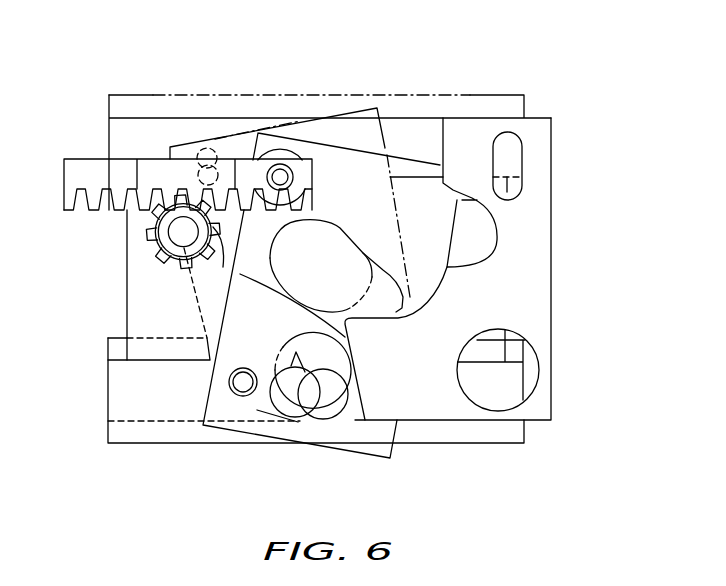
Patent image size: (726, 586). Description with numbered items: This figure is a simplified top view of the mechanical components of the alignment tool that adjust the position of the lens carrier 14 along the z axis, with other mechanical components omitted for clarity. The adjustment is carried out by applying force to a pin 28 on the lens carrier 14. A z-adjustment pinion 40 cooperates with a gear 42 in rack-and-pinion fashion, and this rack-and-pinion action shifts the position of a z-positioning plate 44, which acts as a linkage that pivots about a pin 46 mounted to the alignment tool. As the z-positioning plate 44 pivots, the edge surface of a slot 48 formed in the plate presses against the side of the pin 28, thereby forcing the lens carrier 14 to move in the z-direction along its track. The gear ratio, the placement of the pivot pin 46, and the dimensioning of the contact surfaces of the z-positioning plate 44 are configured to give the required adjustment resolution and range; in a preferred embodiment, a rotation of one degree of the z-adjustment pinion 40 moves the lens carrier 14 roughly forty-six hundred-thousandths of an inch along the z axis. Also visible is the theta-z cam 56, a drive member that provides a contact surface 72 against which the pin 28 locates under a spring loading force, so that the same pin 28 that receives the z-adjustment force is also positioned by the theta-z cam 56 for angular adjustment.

The lens carrier 14 is at (232, 95).
The gear 42 is at (150, 158).
The z-positioning plate 44 is at (407, 158).
The z-adjustment pinion 40 is at (172, 260).
The pin 46 is at (227, 383).
The slot 48 is at (257, 410).
The pin 28 is at (317, 420).
The contact surface 72 is at (357, 343).
The theta-z cam 56 is at (551, 250).